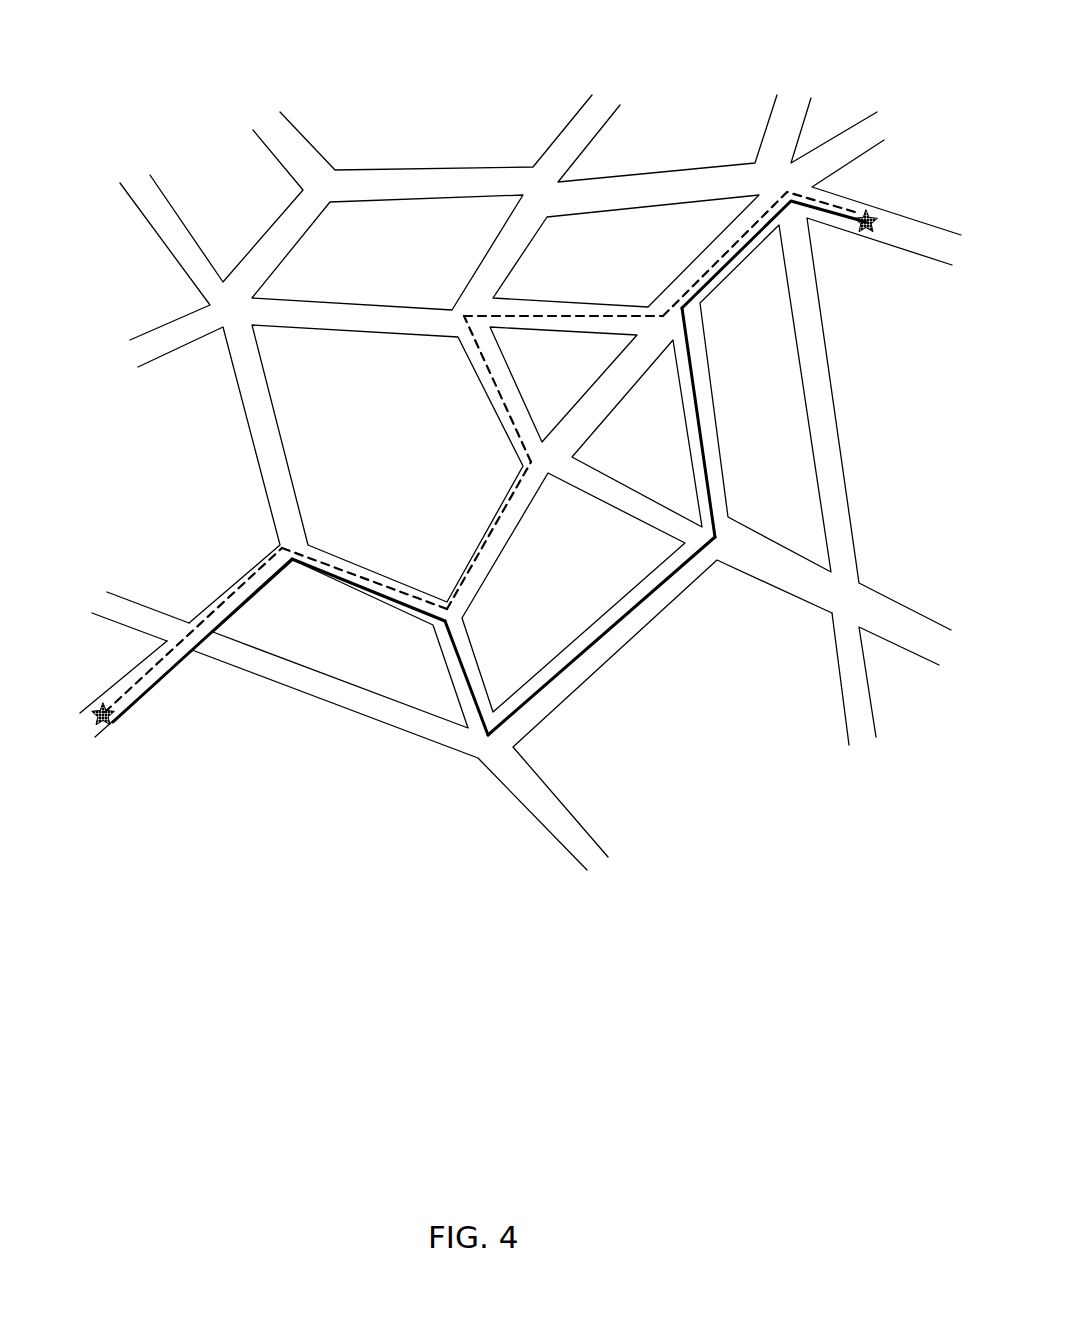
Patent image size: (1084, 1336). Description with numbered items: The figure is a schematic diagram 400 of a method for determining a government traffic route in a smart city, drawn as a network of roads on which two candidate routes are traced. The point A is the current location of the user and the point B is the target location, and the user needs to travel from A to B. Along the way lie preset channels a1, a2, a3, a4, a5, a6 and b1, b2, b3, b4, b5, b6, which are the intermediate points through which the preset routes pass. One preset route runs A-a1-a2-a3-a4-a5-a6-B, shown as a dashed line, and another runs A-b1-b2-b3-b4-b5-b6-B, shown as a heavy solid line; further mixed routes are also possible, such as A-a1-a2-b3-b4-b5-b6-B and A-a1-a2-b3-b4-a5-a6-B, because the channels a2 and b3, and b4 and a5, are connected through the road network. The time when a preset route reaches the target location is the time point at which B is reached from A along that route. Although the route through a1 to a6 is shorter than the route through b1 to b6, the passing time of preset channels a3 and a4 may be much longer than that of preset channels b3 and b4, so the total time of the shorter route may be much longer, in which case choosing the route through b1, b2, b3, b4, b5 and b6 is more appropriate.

The map / road network 400 is at (84, 42).
The preset channel a1 is at (280, 533).
The preset channel a2 is at (447, 605).
The preset channel a3 is at (523, 468).
The preset channel a4 is at (462, 332).
The preset channel a5 is at (650, 310).
The preset channel a6 is at (785, 192).
The preset channel b1 is at (293, 565).
The preset channel b2 is at (463, 625).
The preset channel b3 is at (490, 737).
The preset channel b4 is at (717, 562).
The preset channel b5 is at (684, 310).
The preset channel b6 is at (792, 202).
The current location A is at (113, 720).
The target location B is at (868, 226).